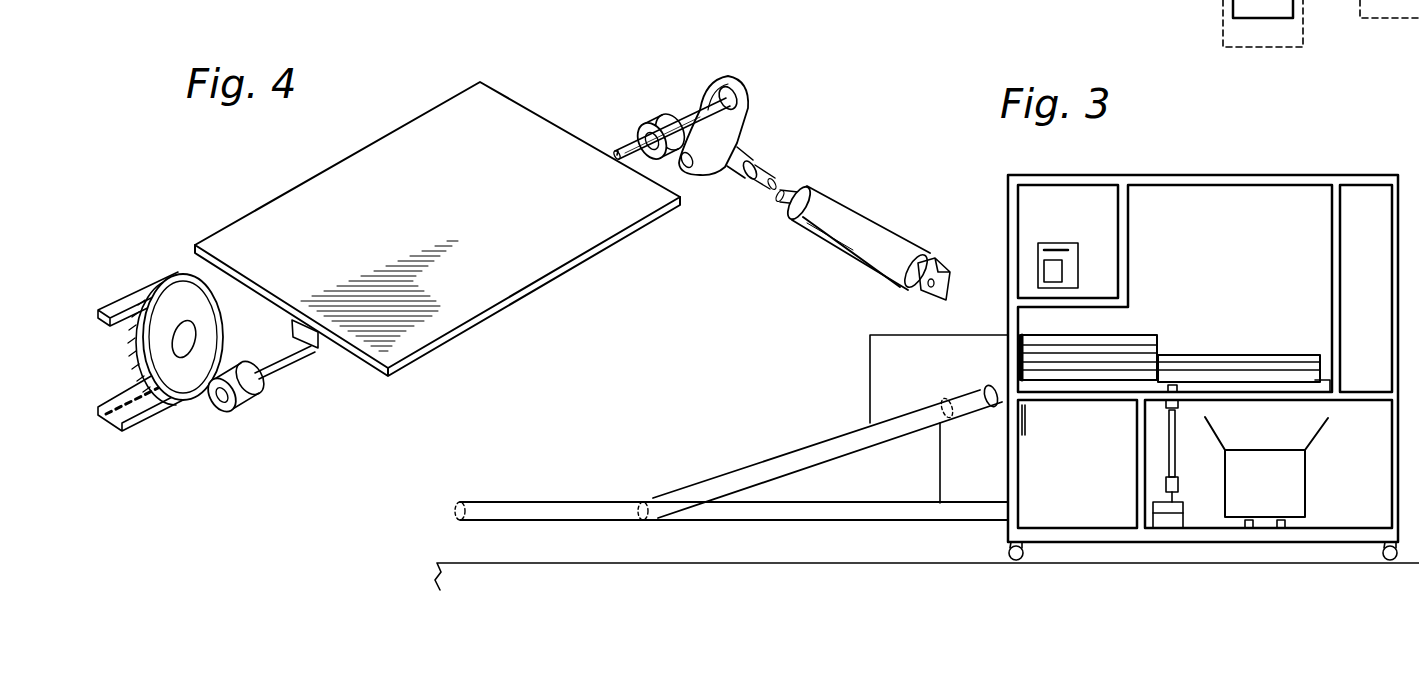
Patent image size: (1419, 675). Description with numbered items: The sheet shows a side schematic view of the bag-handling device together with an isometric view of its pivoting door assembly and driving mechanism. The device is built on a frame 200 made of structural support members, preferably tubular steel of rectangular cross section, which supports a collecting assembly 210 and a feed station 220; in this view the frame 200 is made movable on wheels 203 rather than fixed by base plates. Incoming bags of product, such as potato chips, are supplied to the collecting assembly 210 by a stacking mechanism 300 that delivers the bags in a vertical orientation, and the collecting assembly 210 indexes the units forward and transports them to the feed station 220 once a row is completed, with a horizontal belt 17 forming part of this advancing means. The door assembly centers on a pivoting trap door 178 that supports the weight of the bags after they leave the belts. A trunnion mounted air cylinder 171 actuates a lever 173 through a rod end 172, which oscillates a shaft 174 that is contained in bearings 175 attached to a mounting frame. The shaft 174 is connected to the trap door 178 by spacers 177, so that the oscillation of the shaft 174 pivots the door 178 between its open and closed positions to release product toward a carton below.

In FIG. 4, the horizontal belt 17 is at (130, 302).
In FIG. 4, the trunnion mounted air cylinder 171 is at (878, 218).
In FIG. 4, the rod end 172 is at (740, 146).
In FIG. 4, the lever 173 is at (730, 75).
In FIG. 4, the shaft 174 is at (685, 117).
In FIG. 4, the bearings 175 is at (253, 402).
In FIG. 4, the spacers 177 is at (310, 340).
In FIG. 4, the pivoting trap door 178 is at (280, 195).
In FIG. 3, the frame 200 is at (1322, 168).
In FIG. 3, the wheels 203 is at (1025, 553).
In FIG. 3, the collecting assembly 210 is at (1149, 330).
In FIG. 3, the feed station 220 is at (1268, 349).
In FIG. 3, the stacking mechanism 300 is at (892, 483).